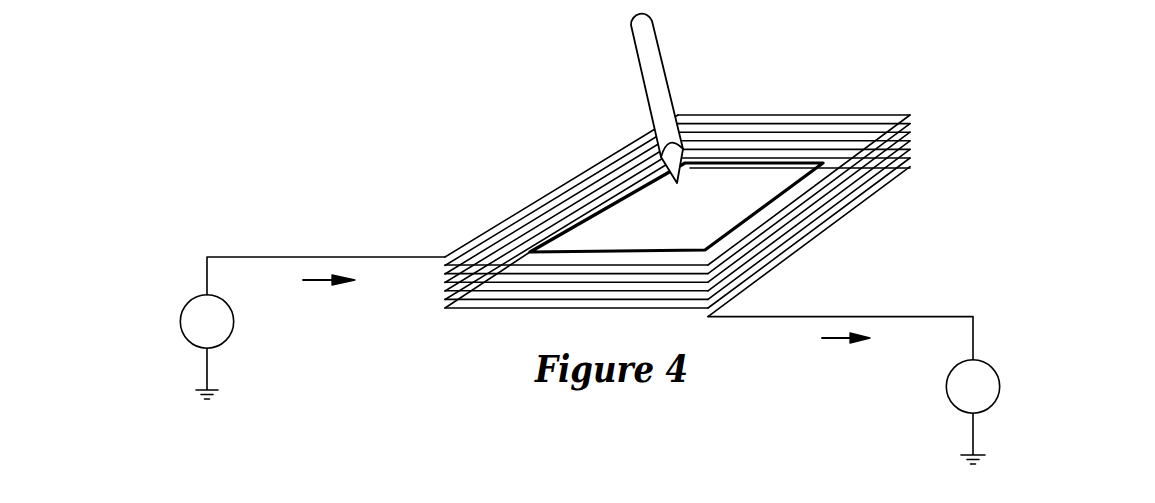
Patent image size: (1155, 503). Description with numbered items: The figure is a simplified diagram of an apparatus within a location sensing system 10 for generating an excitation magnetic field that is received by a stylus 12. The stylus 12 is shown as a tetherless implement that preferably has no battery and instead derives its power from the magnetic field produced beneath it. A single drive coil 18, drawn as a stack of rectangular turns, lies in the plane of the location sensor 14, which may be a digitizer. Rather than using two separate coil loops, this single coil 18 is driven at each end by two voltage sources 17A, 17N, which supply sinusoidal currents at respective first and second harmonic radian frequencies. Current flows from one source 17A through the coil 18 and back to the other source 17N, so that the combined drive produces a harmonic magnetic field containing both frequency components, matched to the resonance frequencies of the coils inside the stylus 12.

The location sensing system 10 is at (427, 98).
The stylus 12 is at (650, 65).
The location sensor 14 is at (689, 223).
The voltage source 17A is at (190, 294).
The voltage source 17N is at (988, 364).
The drive coil 18 is at (535, 200).